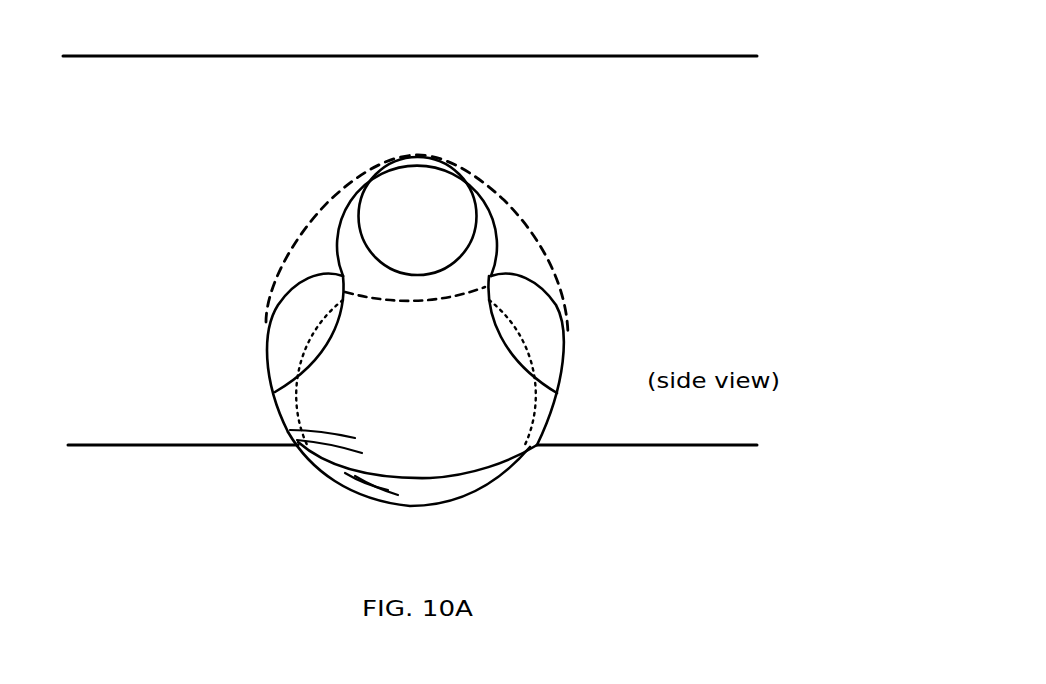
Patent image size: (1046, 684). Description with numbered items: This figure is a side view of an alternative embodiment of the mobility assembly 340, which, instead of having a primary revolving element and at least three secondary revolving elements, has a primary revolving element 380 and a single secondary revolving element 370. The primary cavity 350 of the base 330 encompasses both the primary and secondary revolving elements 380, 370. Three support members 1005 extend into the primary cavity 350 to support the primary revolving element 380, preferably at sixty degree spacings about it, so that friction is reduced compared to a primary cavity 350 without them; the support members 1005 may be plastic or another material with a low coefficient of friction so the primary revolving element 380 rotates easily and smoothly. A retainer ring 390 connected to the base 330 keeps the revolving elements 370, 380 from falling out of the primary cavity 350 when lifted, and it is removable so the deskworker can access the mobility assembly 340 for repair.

The base 330 is at (596, 55).
The mobility assembly 340 is at (585, 194).
The primary cavity 350 is at (570, 277).
The secondary revolving element 370 is at (433, 188).
The primary revolving element 380 is at (447, 503).
The retainer ring 390 is at (480, 462).
The support members 1005 is at (423, 298).